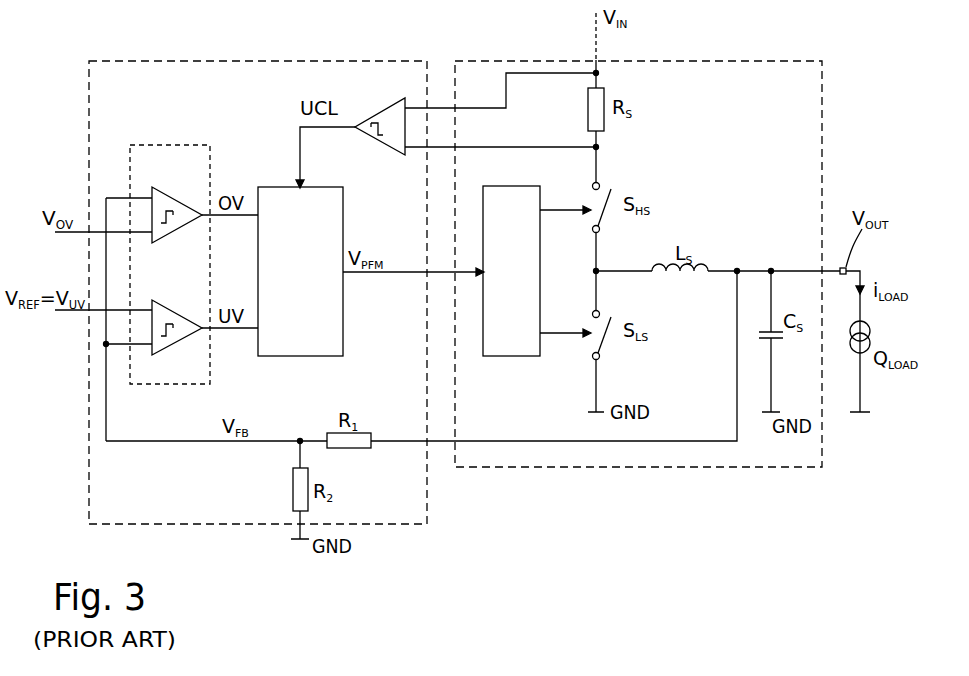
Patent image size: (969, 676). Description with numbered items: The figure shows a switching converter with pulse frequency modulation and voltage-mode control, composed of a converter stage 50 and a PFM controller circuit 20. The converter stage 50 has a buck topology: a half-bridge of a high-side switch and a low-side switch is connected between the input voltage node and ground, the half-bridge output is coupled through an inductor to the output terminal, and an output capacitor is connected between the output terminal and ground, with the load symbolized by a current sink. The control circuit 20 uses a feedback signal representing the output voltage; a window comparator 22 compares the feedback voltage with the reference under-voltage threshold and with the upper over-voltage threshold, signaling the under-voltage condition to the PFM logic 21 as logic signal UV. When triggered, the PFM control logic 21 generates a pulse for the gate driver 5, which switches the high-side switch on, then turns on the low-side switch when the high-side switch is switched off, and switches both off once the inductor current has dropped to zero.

The PFM controller circuit 20 is at (258, 281).
The window comparator 22 is at (187, 145).
The PFM control logic 21 is at (300, 343).
The gate driver 5 is at (527, 343).
The converter stage 50 is at (638, 253).